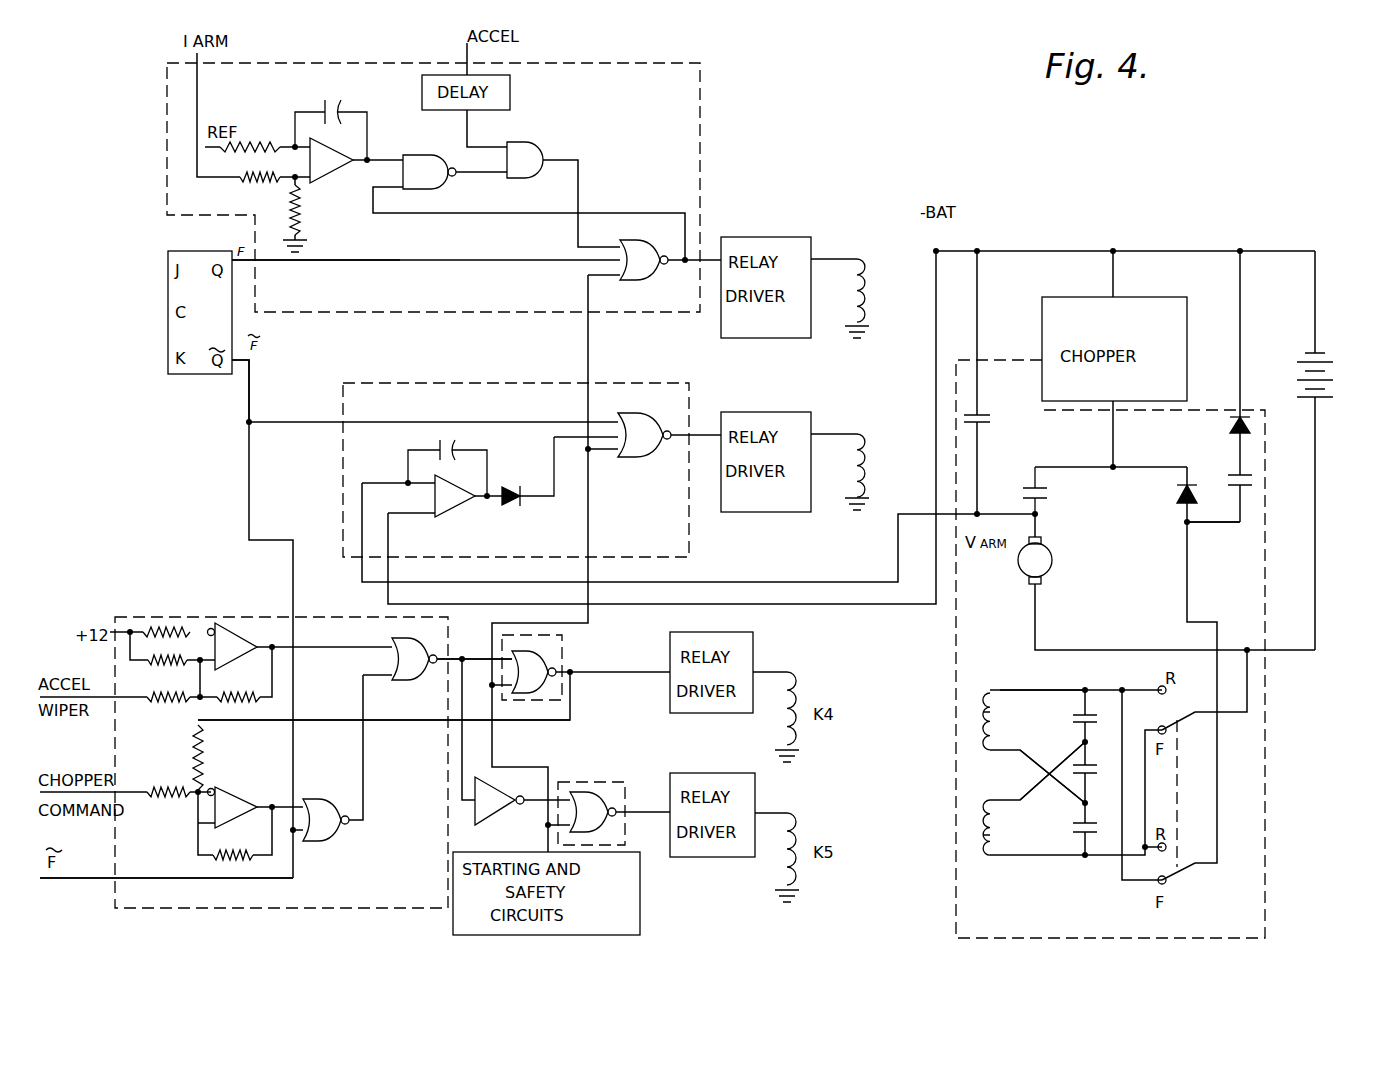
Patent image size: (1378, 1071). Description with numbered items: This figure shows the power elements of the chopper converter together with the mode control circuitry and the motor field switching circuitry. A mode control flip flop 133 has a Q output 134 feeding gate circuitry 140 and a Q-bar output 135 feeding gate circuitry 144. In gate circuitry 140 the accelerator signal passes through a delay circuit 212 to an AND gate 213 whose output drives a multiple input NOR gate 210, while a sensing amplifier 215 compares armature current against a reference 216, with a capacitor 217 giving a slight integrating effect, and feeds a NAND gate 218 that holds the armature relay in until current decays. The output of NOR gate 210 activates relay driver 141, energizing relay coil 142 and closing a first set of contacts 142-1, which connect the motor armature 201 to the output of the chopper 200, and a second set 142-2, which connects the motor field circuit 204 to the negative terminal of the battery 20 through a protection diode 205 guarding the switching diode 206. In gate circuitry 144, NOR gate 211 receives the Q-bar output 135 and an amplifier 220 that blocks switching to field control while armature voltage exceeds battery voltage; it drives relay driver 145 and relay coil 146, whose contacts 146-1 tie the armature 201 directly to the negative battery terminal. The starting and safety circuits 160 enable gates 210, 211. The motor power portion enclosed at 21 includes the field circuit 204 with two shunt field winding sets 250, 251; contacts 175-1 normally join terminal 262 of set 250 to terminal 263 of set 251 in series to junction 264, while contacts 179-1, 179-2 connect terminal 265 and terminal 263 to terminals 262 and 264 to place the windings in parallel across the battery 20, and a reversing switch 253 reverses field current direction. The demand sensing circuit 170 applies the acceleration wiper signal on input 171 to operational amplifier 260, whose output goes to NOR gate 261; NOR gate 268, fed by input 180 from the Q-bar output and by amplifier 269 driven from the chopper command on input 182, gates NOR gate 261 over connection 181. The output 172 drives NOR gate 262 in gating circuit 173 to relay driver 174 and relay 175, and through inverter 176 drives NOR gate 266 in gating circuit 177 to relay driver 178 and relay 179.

The gate circuitry 140 is at (698, 63).
The reference 216 is at (264, 146).
The capacitor 217 is at (340, 116).
The sensing amplifier 215 is at (323, 180).
The NAND gate 218 is at (432, 142).
The AND gate 213 is at (528, 143).
The delay circuit 212 is at (510, 92).
The NOR gate 210 is at (630, 280).
The Q output 134 is at (247, 263).
The mode control flip flop 133 is at (168, 364).
The Q-bar output 135 is at (250, 377).
The gate circuitry 144 is at (689, 383).
The NOR gate 211 is at (650, 414).
The amplifier 220 is at (447, 518).
The relay driver 141 is at (762, 237).
The relay coil 142 is at (864, 280).
The relay driver 145 is at (795, 412).
The relay coil 146 is at (864, 474).
The chopper 200 is at (1183, 297).
The contacts 146-1 is at (1012, 402).
The first set of contacts 142-1 is at (1022, 488).
The protection diode 205 is at (1232, 426).
The switching diode 206 is at (1177, 492).
The junction 264 is at (1186, 525).
The motor armature 201 is at (1052, 564).
The second set of contacts 142-2 is at (1246, 497).
The battery 20 is at (1320, 400).
The motor circuit 21 is at (1268, 838).
The motor field circuit 204 is at (1046, 684).
The contacts 179-1 is at (1090, 690).
The contacts 175-1 is at (1083, 763).
The contacts 179-2 is at (1082, 858).
The NOR gate 262 is at (520, 688).
The terminal 263 is at (1012, 798).
The terminal 265 is at (1022, 843).
The shunt field winding set 250 is at (986, 716).
The shunt field winding set 251 is at (986, 834).
The reversing switch 253 is at (1182, 826).
The demand sensing circuit 170 is at (238, 586).
The operational amplifier 260 is at (245, 635).
The input 171 is at (130, 697).
The input 182 is at (138, 790).
The amplifier 269 is at (243, 782).
The NOR gate 268 is at (320, 841).
The NOR gate 261 is at (405, 681).
The feedback line 181 is at (400, 720).
The input 180 is at (97, 878).
The output 172 is at (480, 640).
The gating circuit 173 is at (566, 646).
The NOR gate 266 is at (592, 792).
The gating circuit 177 is at (625, 785).
The relay driver 174 is at (753, 637).
The relay coil 175 is at (794, 702).
The relay driver 178 is at (738, 773).
The relay 179 is at (794, 842).
The inverter 176 is at (478, 821).
The starting and safety circuits 160 is at (640, 890).